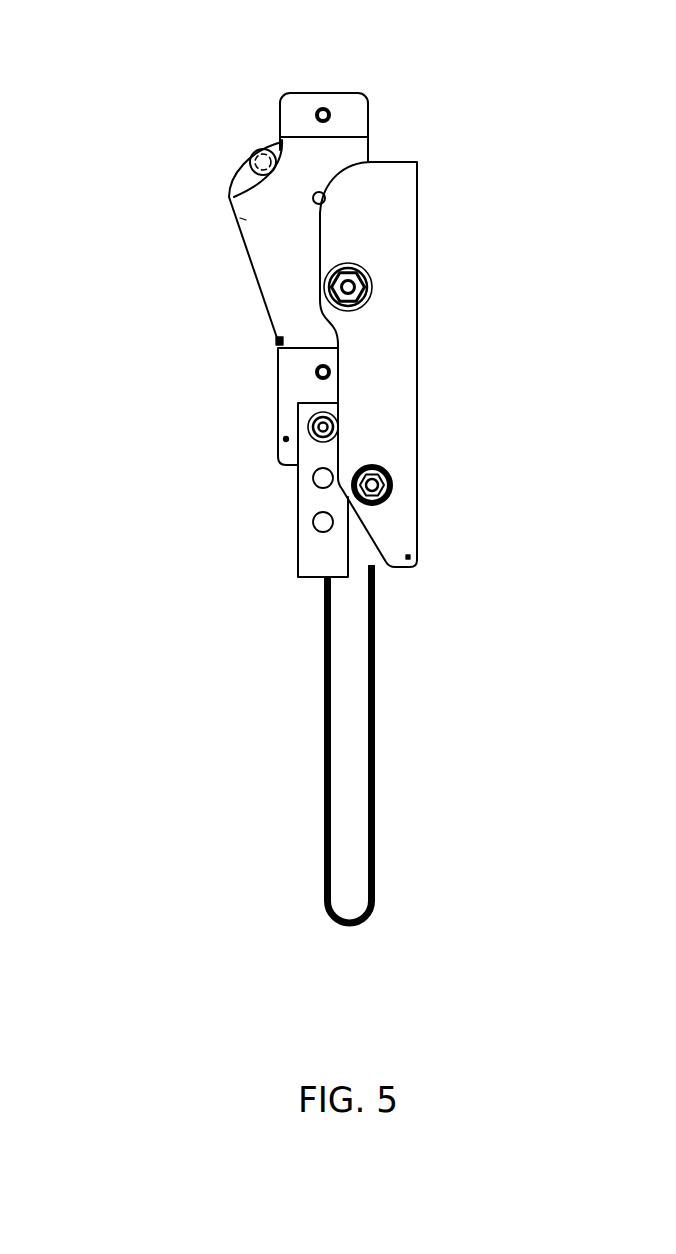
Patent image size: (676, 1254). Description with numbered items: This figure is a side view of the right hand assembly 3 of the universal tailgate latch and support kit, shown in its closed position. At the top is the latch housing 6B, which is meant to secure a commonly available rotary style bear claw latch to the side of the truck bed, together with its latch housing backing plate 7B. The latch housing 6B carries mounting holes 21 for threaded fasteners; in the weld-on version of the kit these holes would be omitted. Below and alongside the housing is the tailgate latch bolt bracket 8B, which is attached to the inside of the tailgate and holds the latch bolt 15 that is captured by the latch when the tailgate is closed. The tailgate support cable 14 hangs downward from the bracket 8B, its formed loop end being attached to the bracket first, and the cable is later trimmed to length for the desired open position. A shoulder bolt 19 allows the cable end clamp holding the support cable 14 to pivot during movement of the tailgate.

The right hand assembly 3 is at (125, 302).
The latch housing 6B is at (282, 100).
The latch housing backing plate 7B is at (240, 156).
The tailgate latch bolt bracket 8B is at (418, 395).
The latch bolt 15 is at (373, 272).
The mounting holes 21 is at (333, 109).
The shoulder bolt 19 is at (297, 450).
The tailgate support cable 14 is at (375, 762).